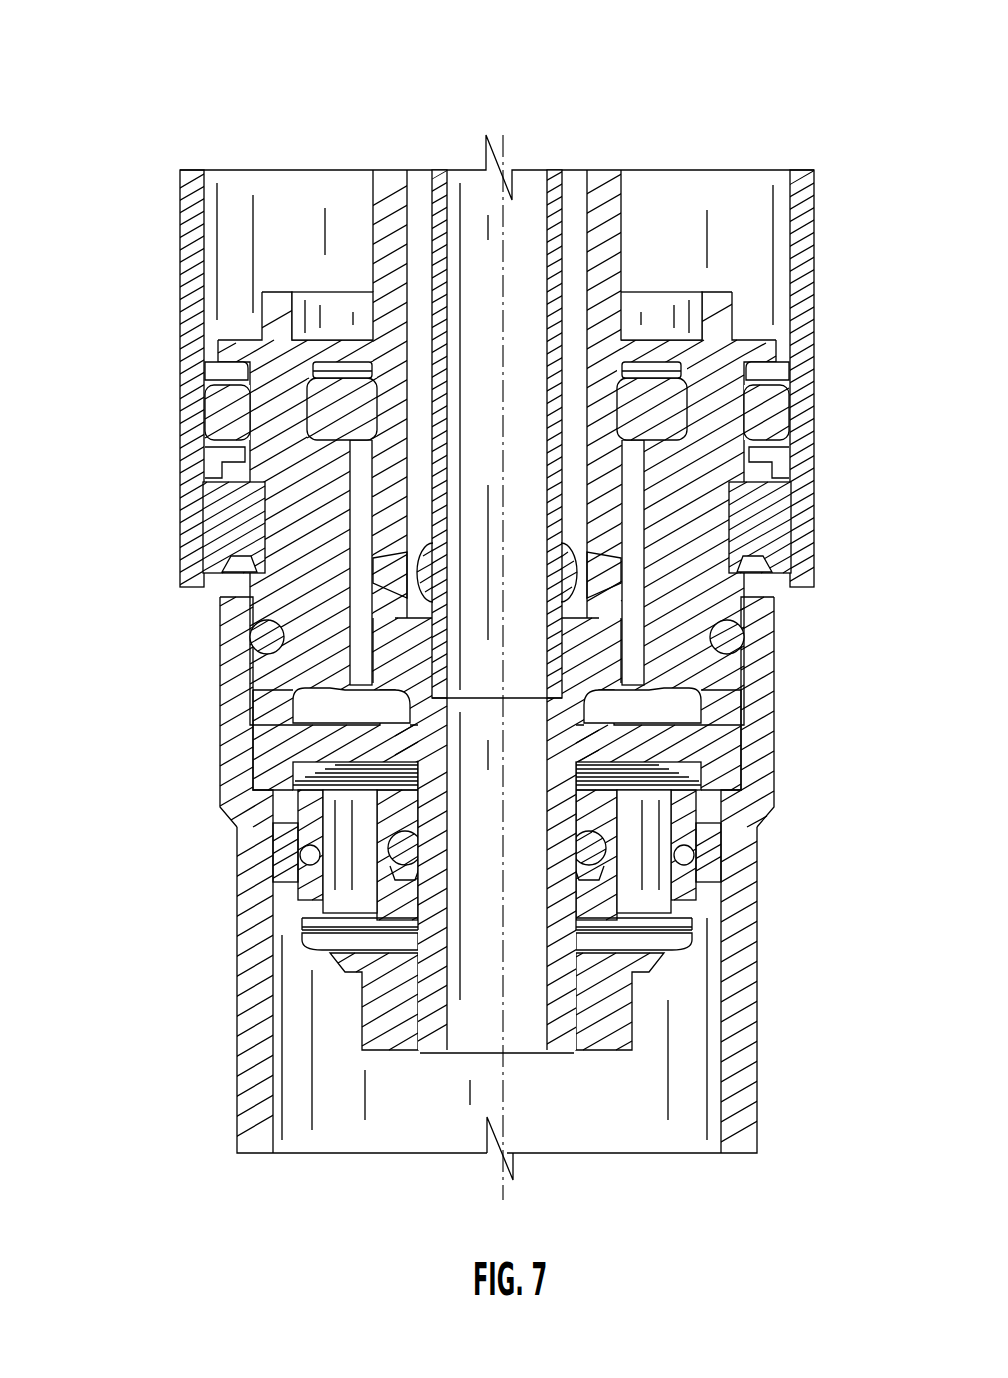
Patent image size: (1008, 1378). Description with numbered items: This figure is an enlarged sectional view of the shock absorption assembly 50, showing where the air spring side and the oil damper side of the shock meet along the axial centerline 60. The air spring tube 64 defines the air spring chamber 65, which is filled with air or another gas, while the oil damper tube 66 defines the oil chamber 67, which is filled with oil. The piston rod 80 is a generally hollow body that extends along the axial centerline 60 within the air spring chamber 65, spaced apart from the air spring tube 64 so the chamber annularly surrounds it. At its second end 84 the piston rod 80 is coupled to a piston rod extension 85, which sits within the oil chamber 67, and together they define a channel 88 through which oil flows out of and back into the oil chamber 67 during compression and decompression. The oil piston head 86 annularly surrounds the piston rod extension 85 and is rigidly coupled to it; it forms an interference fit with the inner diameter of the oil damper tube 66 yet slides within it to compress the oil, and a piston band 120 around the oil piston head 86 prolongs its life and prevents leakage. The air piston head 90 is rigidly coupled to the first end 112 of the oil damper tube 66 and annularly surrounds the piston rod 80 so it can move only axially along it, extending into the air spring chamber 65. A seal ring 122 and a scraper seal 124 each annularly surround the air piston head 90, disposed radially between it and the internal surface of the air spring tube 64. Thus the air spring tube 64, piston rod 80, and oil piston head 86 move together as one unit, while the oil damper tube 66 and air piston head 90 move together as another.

The shock absorption assembly 50 is at (461, 689).
The axial centerline 60 is at (538, 649).
The air spring tube 64 is at (452, 466).
The air spring chamber 65 is at (495, 261).
The oil damper tube 66 is at (453, 968).
The oil chamber 67 is at (494, 1029).
The piston rod 80 is at (543, 393).
The second end of the piston rod 84 is at (436, 738).
The piston rod extension 85 is at (414, 827).
The oil piston head 86 is at (572, 920).
The channel 88 is at (497, 610).
The air piston head 90 is at (492, 404).
The first end of the oil damper tube 112 is at (542, 708).
The piston band 120 is at (579, 852).
The seal ring 122 is at (443, 420).
The scraper seal 124 is at (441, 521).